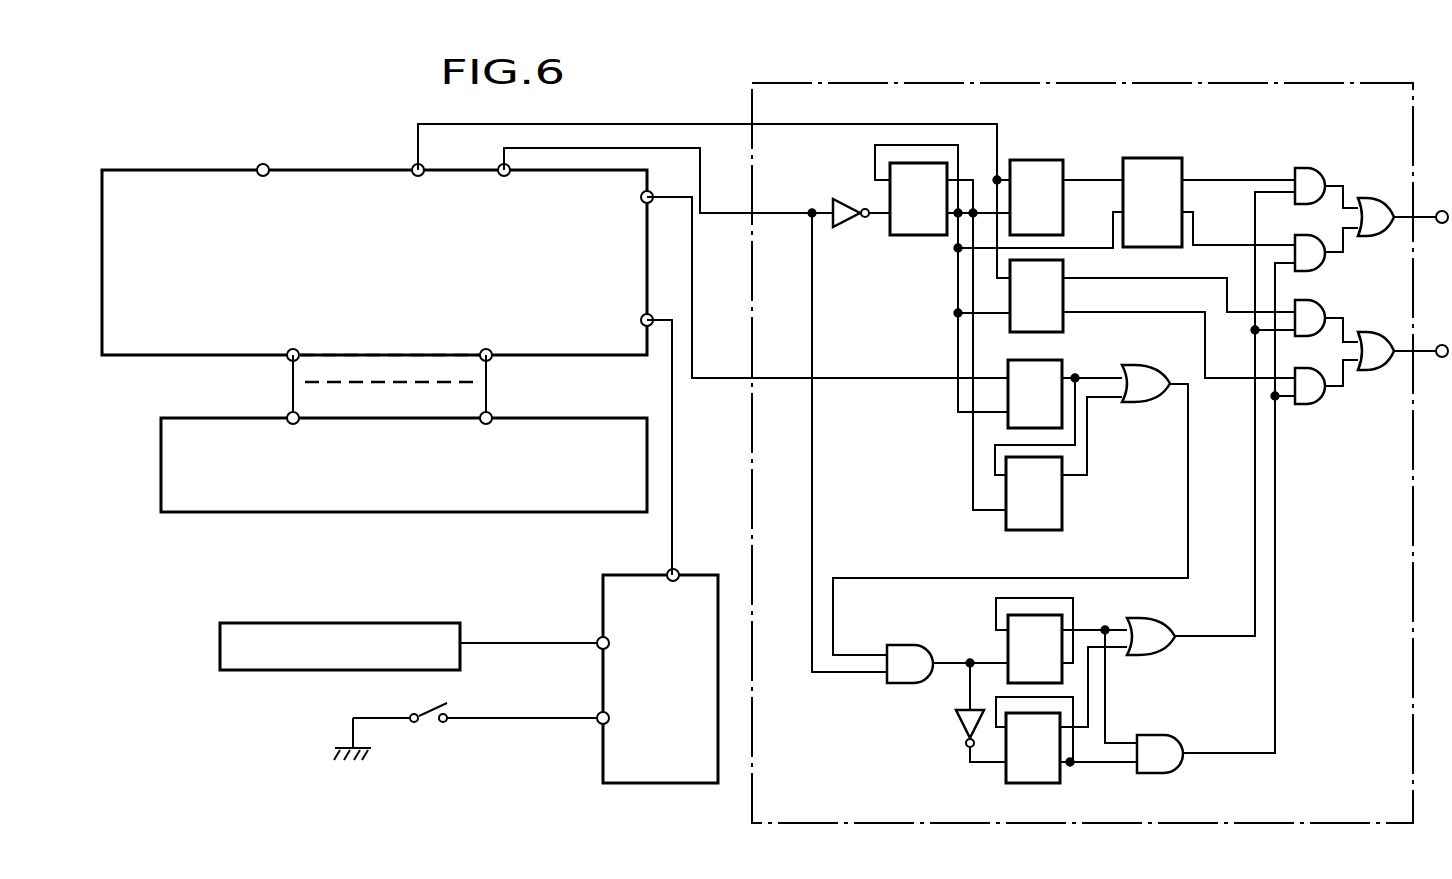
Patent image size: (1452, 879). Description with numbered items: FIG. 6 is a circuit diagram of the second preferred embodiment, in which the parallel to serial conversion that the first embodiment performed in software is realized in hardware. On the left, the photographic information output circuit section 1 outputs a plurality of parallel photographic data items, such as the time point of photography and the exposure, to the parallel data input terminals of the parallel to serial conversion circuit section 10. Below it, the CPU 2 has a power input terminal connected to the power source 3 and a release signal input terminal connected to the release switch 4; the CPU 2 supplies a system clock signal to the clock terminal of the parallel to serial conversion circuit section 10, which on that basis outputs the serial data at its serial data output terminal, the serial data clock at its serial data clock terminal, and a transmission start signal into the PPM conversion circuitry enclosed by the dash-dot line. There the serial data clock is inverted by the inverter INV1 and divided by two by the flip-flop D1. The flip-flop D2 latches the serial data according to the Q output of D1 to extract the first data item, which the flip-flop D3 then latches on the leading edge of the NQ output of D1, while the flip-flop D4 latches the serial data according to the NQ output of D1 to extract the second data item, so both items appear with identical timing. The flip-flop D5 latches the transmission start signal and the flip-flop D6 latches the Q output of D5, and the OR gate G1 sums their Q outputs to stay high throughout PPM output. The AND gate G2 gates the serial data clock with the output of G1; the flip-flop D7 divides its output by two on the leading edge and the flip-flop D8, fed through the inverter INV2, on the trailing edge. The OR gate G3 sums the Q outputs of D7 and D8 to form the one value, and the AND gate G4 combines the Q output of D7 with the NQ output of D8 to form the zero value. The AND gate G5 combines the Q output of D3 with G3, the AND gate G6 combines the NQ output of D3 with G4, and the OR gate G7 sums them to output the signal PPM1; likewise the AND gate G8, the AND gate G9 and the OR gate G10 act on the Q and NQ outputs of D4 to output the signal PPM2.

The parallel to serial conversion circuit section 10 is at (363, 168).
The photographic information output circuit section 1 is at (396, 512).
The CPU 2 is at (603, 763).
The power source 3 is at (258, 670).
The release switch 4 is at (431, 721).
The inverter INV1 is at (838, 208).
The inverter INV2 is at (960, 732).
The flip-flop D1 is at (912, 240).
The flip-flop D2 is at (1066, 175).
The flip-flop D3 is at (1185, 170).
The flip-flop D4 is at (1065, 295).
The flip-flop D5 is at (1065, 365).
The flip-flop D6 is at (1062, 508).
The flip-flop D7 is at (1008, 648).
The flip-flop D8 is at (1065, 780).
The OR gate G1 is at (1140, 400).
The AND gate G2 is at (905, 684).
The OR gate G3 is at (1150, 645).
The AND gate G4 is at (1170, 750).
The AND gate G5 is at (1316, 172).
The AND gate G6 is at (1312, 262).
The OR gate G7 is at (1388, 222).
The AND gate G8 is at (1328, 302).
The AND gate G9 is at (1312, 402).
The OR gate G10 is at (1380, 368).
The PPM signal PPM1 is at (1440, 210).
The PPM signal PPM2 is at (1440, 365).